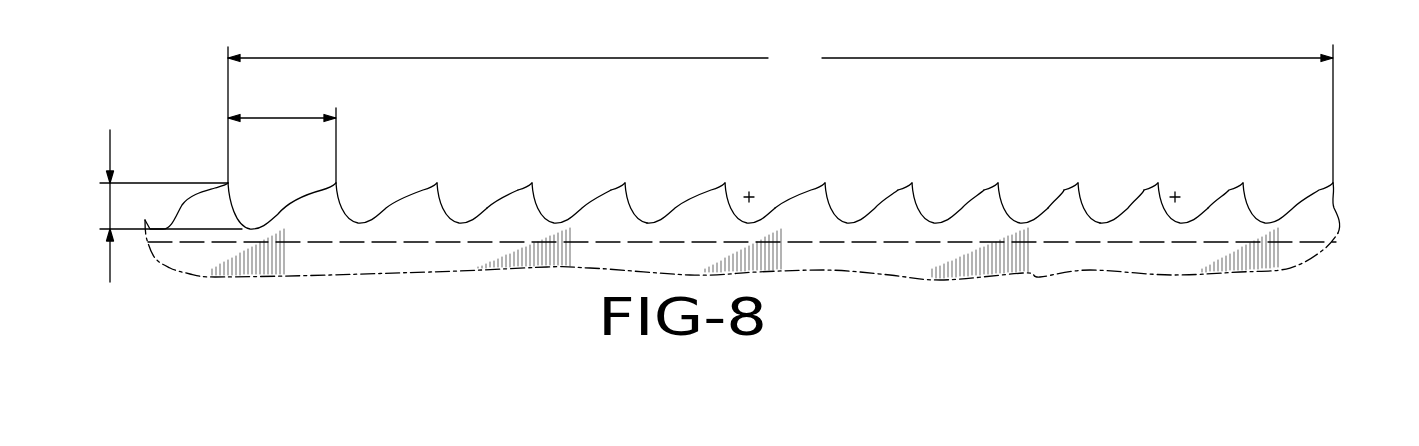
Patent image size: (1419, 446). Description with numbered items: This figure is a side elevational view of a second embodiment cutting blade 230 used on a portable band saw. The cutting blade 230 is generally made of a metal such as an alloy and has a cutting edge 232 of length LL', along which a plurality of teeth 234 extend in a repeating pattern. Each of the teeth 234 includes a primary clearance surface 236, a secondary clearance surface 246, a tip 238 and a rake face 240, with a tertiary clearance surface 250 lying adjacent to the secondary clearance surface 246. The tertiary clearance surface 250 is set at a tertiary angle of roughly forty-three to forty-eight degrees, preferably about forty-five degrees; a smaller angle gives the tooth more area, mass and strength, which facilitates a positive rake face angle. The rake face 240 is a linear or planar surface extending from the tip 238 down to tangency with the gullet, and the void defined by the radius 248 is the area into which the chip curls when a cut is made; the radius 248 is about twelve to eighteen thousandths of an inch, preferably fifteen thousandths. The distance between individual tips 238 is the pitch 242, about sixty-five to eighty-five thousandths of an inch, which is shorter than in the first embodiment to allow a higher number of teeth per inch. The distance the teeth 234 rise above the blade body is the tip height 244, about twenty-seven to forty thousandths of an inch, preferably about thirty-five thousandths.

The cutting blade 230 is at (182, 122).
The cutting edge 232 is at (1349, 198).
The teeth 234 is at (619, 178).
The primary clearance surface 236 is at (530, 187).
The tip 238 is at (437, 183).
The rake face 240 is at (630, 200).
The pitch 242 is at (283, 118).
The tip height 244 is at (108, 205).
The secondary clearance surface 246 is at (495, 193).
The radius 248 is at (725, 260).
The tertiary clearance surface 250 is at (583, 196).